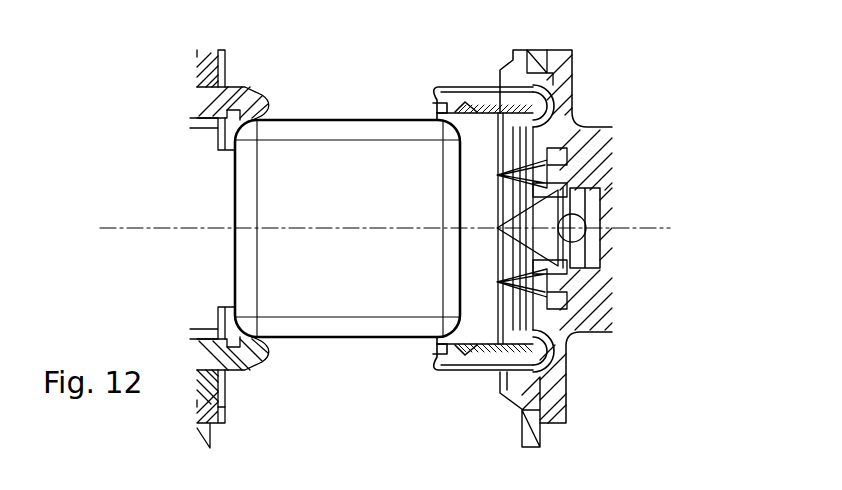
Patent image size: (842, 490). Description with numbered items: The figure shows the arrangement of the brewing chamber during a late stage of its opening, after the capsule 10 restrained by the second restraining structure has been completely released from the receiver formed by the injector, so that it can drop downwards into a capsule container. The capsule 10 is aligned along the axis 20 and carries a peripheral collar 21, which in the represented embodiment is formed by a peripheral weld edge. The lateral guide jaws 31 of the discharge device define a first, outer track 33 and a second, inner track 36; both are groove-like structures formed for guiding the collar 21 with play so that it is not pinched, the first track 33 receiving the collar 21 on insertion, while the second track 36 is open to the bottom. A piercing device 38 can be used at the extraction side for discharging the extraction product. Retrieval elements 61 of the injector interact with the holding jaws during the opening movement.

The capsule 10 is at (325, 255).
The axis 20 is at (152, 228).
The collar 21 is at (433, 103).
The lateral guide jaws 31 is at (500, 97).
The first track 33 is at (465, 107).
The second track 36 is at (547, 407).
The piercing device 38 is at (560, 200).
The retrieval elements 61 is at (252, 98).